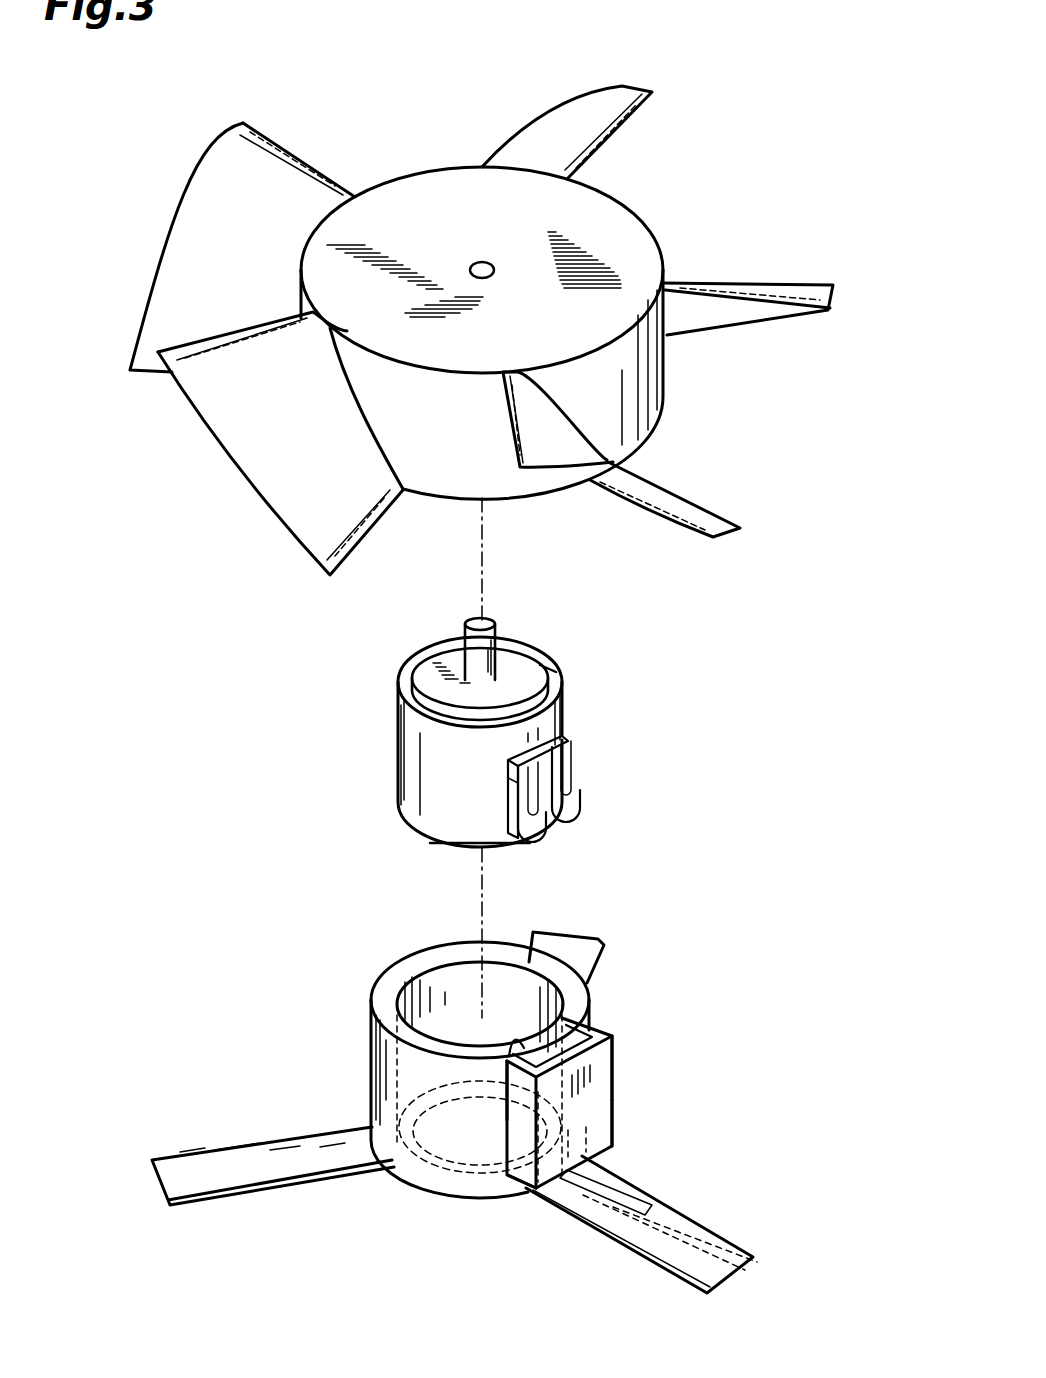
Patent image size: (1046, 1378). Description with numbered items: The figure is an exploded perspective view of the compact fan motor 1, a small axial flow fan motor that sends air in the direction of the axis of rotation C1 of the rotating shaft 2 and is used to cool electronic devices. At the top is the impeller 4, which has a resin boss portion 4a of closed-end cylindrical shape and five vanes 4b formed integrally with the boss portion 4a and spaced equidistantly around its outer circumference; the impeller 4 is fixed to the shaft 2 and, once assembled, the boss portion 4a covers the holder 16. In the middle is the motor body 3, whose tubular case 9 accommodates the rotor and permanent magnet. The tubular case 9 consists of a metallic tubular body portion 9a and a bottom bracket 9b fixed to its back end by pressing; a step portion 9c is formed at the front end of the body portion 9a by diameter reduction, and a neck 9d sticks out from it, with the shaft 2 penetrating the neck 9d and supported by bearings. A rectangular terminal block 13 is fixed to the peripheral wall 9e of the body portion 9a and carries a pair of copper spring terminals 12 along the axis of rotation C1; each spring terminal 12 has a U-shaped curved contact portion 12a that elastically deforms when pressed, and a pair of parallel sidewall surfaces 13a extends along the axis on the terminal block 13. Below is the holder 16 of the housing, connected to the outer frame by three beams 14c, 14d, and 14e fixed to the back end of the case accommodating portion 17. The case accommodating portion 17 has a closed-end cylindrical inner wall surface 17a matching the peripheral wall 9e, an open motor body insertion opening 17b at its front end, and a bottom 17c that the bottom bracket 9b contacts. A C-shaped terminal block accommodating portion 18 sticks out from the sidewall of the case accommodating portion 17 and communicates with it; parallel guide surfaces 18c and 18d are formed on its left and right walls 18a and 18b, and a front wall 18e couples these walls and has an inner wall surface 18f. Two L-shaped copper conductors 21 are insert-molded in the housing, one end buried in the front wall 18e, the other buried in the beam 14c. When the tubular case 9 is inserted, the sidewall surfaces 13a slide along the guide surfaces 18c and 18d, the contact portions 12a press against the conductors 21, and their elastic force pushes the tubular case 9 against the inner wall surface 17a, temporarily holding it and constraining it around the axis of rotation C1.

The compact fan motor 1 is at (748, 154).
The rotating shaft 2 is at (498, 650).
The motor body 3 is at (568, 686).
The impeller 4 is at (634, 198).
The boss portion 4a is at (440, 193).
The vanes 4b is at (206, 220).
The tubular case 9 is at (394, 695).
The body portion 9a is at (398, 743).
The bottom bracket 9b is at (460, 847).
The step portion 9c is at (552, 670).
The neck 9d is at (445, 650).
The peripheral wall 9e is at (550, 717).
The spring terminals 12 is at (580, 769).
The contact portion 12a is at (550, 832).
The terminal block 13 is at (570, 738).
The sidewall surfaces 13a is at (510, 780).
The beam 14c is at (702, 1227).
The beam 14d is at (332, 1185).
The beam 14e is at (590, 973).
The holder 16 is at (596, 992).
The case accommodating portion 17 is at (364, 1009).
The inner wall surface 17a is at (433, 1012).
The motor body insertion opening 17b is at (444, 955).
The bottom 17c is at (397, 1125).
The terminal block accommodating portion 18 is at (618, 1073).
The left wall 18a is at (508, 1177).
The right wall 18b is at (607, 1025).
The guide surface 18c is at (510, 1045).
The guide surface 18d is at (612, 1080).
The front wall 18e is at (600, 1120).
The inner wall surface 18f is at (526, 1042).
The conductors 21 is at (643, 1202).
The axis of rotation C1 is at (478, 527).